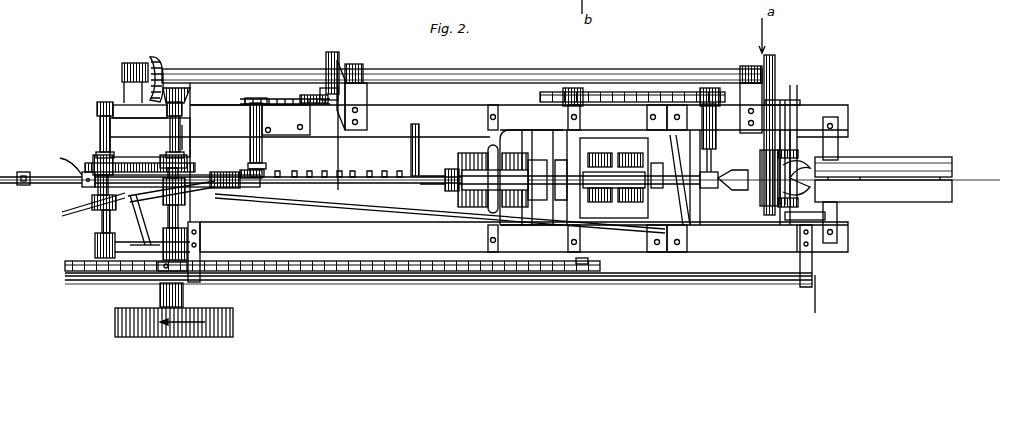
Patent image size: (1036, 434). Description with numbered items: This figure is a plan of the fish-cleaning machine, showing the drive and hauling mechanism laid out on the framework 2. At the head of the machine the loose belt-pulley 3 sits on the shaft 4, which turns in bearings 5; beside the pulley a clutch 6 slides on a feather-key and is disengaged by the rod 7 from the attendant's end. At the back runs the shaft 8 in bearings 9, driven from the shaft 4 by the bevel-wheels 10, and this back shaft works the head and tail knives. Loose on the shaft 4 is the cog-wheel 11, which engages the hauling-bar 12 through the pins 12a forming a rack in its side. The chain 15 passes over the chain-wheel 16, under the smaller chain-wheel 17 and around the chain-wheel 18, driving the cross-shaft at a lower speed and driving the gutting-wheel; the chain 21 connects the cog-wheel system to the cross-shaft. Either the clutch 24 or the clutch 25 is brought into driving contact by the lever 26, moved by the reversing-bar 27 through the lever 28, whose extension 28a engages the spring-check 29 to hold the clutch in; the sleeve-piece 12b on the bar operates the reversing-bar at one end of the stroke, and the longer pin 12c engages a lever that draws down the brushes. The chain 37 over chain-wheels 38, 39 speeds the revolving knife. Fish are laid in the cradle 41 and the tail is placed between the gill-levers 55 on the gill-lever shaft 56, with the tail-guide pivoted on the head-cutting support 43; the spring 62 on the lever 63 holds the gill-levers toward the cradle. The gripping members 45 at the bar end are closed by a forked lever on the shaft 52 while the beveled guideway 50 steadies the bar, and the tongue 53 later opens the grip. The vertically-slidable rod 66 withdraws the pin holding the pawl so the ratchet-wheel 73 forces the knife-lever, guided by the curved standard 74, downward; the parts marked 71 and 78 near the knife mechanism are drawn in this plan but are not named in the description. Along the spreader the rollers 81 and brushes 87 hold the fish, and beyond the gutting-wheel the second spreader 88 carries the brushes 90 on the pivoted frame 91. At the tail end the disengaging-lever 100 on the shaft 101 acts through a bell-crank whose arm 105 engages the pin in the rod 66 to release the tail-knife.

The framework 2 is at (736, 240).
The loose belt-pulley 3 is at (180, 336).
The shaft 4 is at (183, 135).
The bearings 5 is at (188, 108).
The clutch 6 is at (185, 296).
The rod 7 is at (334, 283).
The back shaft 8 is at (232, 70).
The bearings 9 is at (138, 62).
The bevel-wheels 10 is at (162, 58).
The cog-wheel 11 is at (200, 172).
The hauling-bar 12 is at (125, 155).
The pins 12a is at (362, 181).
The sleeve-piece 12b is at (24, 171).
The longer pin 12c is at (412, 172).
The chain 15 is at (436, 290).
The chain-wheel 16 is at (65, 267).
The smaller chain-wheel 17 is at (162, 272).
The chain-wheel 18 is at (582, 266).
The chain 21 is at (144, 165).
The clutch 24 is at (205, 192).
The clutch 25 is at (83, 206).
The lever 26 is at (95, 205).
The reversing-bar 27 is at (72, 200).
The lever 28 is at (102, 222).
The extension 28a is at (142, 240).
The spring-check 29 is at (140, 266).
The chain 37 is at (626, 90).
The chain-wheel 38 is at (561, 88).
The chain-wheel 39 is at (710, 88).
The cradle 41 is at (888, 170).
The head-cutting support 43 is at (762, 165).
The gripping members 45 is at (720, 186).
The beveled guideway 50 is at (688, 180).
The shaft 52 is at (716, 152).
The tongue 53 is at (242, 203).
The gill-levers 55 is at (838, 132).
The gill-lever shaft 56 is at (785, 118).
The spring 62 is at (838, 222).
The lever 63 is at (795, 220).
The vertically-slidable rod 66 is at (326, 85).
The hook lever 71 is at (800, 150).
The ratchet-wheel 73 is at (336, 52).
The curved standard 74 is at (348, 75).
The rod 78 is at (340, 165).
The rollers 81 is at (586, 222).
The brushes 87 is at (602, 152).
The second spreader 88 is at (446, 188).
The brushes 90 is at (470, 160).
The frame 91 is at (538, 128).
The disengaging-lever 100 is at (268, 170).
The shaft 101 is at (250, 122).
The arm 105 is at (312, 92).